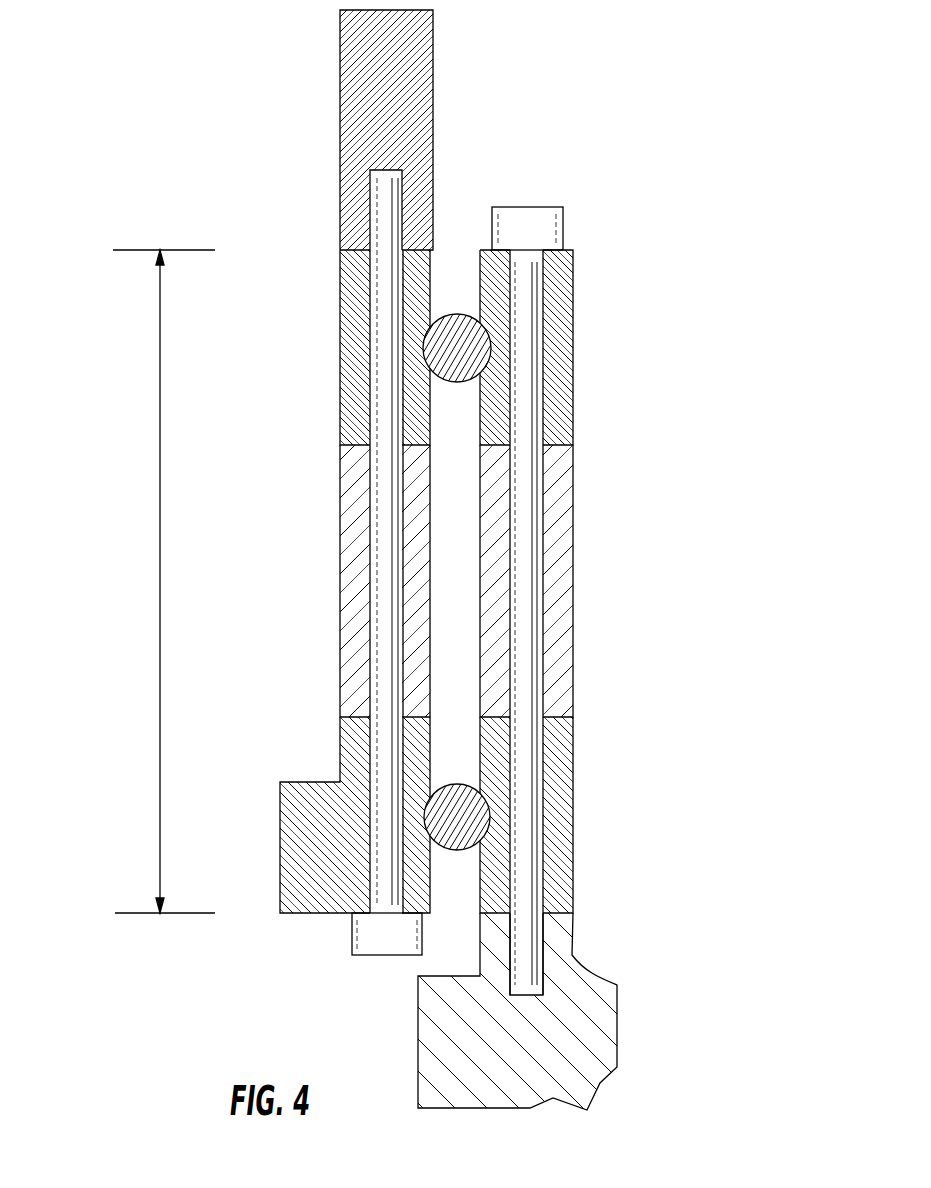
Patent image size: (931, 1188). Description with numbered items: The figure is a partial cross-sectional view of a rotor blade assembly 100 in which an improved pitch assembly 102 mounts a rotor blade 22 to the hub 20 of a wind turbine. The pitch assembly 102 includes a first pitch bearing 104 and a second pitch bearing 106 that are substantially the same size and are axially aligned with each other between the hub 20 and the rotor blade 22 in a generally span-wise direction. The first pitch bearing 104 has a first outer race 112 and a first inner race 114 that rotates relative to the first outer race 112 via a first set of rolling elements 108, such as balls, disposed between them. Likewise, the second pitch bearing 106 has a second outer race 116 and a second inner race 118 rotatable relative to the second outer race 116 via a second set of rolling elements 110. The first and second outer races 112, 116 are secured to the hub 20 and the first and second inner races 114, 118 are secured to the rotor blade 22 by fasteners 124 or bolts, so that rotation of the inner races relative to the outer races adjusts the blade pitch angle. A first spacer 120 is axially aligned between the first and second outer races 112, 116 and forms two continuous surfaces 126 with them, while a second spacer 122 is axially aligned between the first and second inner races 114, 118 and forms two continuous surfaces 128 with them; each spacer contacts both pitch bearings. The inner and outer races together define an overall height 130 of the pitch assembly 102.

The hub 20 is at (625, 1017).
The rotor blade 22 is at (338, 120).
The rotor blade assembly 100 is at (702, 179).
The pitch assembly 102 is at (620, 440).
The first pitch bearing 104 is at (590, 380).
The second pitch bearing 106 is at (585, 860).
The first set of rolling elements 108 is at (465, 314).
The second set of rolling elements 110 is at (458, 850).
The first outer race 112 is at (573, 305).
The first inner race 114 is at (340, 308).
The second outer race 116 is at (573, 755).
The second inner race 118 is at (342, 757).
The first spacer 120 is at (585, 583).
The second spacer 122 is at (338, 640).
The fasteners 124 is at (383, 472).
The continuous surface 126 is at (573, 663).
The continuous surface 128 is at (430, 572).
The overall height 130 is at (160, 590).